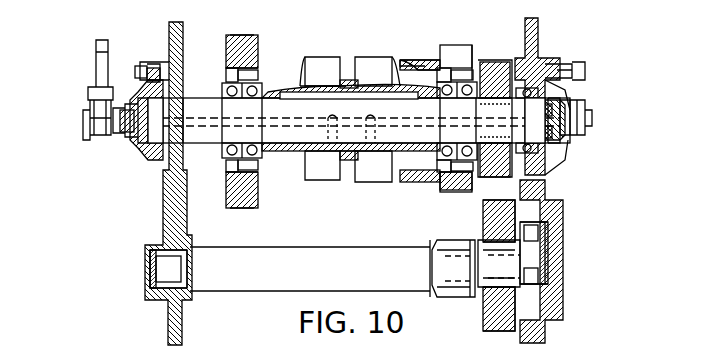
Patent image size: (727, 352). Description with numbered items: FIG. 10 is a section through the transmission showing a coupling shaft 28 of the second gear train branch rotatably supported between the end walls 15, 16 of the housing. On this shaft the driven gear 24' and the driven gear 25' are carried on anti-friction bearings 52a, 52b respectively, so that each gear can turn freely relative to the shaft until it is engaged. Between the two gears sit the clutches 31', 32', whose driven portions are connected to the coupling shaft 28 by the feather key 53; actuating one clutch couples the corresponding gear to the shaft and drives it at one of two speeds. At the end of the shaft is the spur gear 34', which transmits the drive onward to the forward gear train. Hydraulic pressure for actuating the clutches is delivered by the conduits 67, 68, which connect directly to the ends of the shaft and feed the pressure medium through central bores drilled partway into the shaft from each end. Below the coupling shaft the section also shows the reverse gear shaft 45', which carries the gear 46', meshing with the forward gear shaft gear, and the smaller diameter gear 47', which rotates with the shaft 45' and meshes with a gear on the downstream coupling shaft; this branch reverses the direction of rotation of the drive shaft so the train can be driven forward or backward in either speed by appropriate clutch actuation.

The end wall 15 is at (172, 45).
The end wall 16 is at (538, 24).
The conduit 67 is at (100, 63).
The conduit 68 is at (586, 110).
The driven gear 24' is at (229, 105).
The anti-friction bearing 52a is at (236, 158).
The anti-friction bearing 52b is at (445, 158).
The feather key 53 is at (302, 101).
The clutch 31' is at (329, 50).
The clutch 32' is at (377, 49).
The driven gear 25' is at (436, 101).
The spur gear 34' is at (495, 99).
The coupling shaft 28 is at (314, 143).
The reverse gear shaft 45' is at (355, 251).
The smaller diameter gear 47' is at (449, 249).
The gear 46' is at (500, 255).